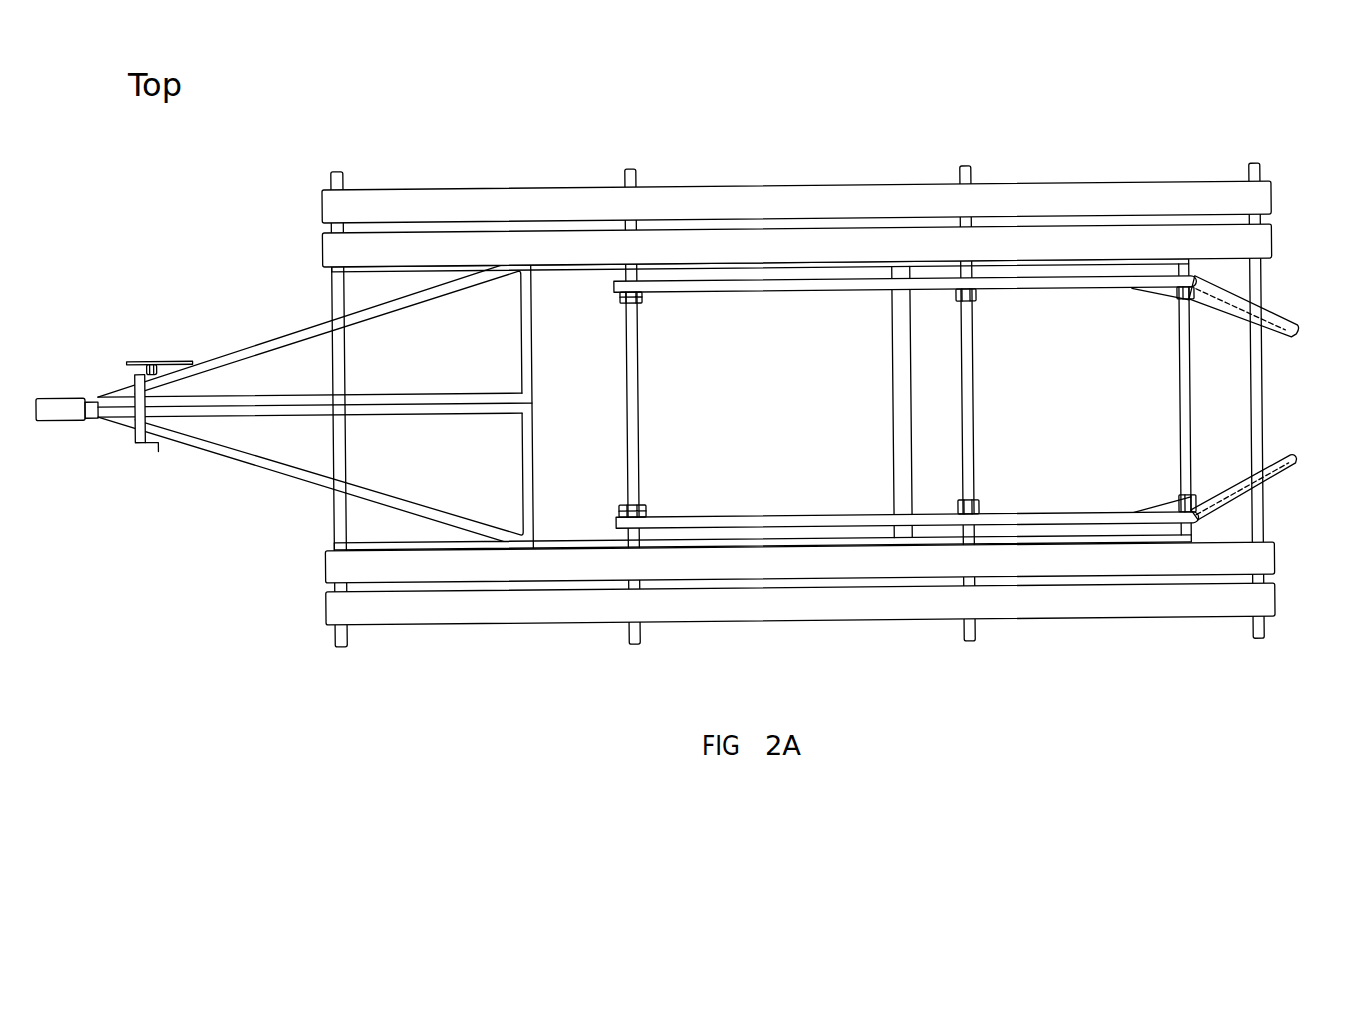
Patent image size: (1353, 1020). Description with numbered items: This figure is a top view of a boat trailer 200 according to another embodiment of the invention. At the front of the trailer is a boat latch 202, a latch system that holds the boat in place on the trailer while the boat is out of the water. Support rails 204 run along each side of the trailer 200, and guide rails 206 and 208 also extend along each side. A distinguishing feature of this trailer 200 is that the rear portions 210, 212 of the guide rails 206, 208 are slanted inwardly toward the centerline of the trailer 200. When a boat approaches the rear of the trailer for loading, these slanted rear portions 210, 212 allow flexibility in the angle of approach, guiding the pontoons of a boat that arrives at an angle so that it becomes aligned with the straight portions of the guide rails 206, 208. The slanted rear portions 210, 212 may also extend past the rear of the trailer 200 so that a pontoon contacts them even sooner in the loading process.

The trailer 200 is at (685, 380).
The boat latch 202 is at (222, 202).
The support rails 204 is at (1165, 197).
The guide rail 206 is at (1028, 292).
The guide rail 208 is at (1008, 516).
The rear portion of guide rail 210 is at (1277, 303).
The rear portion of guide rail 212 is at (1267, 483).